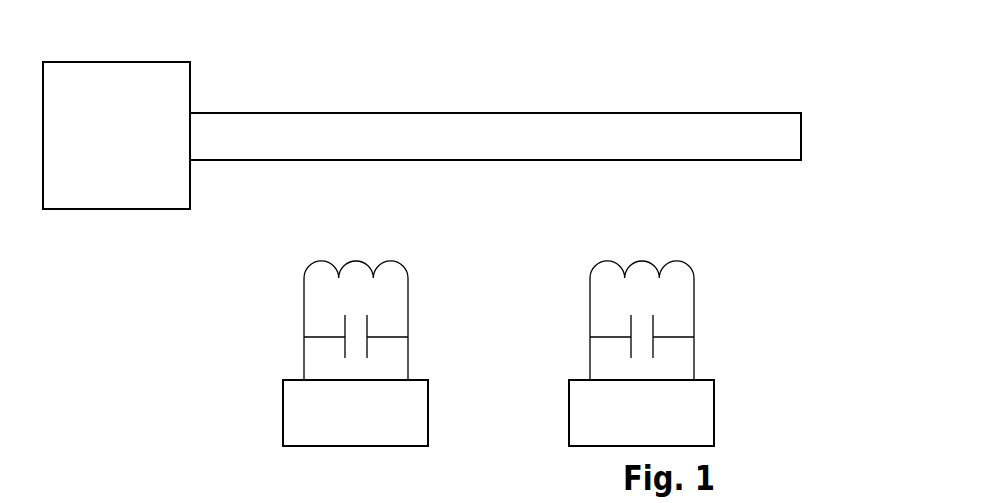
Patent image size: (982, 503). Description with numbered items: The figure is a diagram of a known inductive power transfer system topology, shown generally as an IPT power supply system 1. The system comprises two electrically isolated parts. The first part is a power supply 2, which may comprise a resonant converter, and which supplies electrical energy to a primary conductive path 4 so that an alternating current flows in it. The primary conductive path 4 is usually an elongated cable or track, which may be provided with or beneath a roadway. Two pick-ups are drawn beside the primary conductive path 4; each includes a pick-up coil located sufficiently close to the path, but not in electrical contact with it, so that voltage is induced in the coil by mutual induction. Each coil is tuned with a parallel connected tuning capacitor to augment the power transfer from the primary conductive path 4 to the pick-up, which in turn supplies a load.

The IPT power supply system 1 is at (789, 322).
The power supply 2 is at (111, 78).
The primary conductive path 4 is at (531, 112).